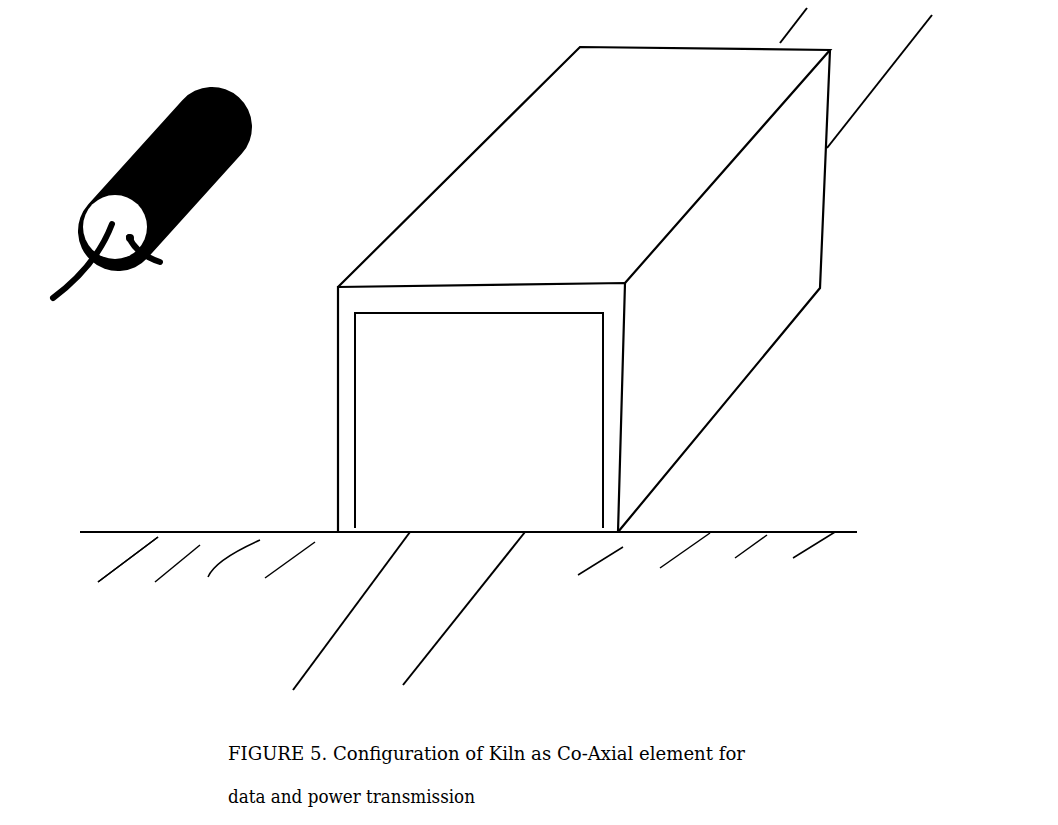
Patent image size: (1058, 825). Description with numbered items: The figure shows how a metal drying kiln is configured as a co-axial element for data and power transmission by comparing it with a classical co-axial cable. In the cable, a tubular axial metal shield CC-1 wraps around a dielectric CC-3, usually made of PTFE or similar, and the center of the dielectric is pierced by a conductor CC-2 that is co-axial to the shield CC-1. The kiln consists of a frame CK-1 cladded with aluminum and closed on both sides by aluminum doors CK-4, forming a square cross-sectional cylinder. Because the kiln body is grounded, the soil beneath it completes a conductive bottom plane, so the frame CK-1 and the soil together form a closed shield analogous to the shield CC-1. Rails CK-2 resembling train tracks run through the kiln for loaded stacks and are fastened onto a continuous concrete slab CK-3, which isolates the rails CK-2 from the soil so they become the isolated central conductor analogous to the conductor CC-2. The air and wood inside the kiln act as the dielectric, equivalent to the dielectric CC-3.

The frame CK-1 is at (398, 212).
The rails CK-2 is at (452, 663).
The concrete slab CK-3 is at (212, 600).
The doors CK-4 is at (392, 414).
The tubular axial metal shield CC-1 is at (96, 168).
The conductor CC-2 is at (130, 300).
The dielectric CC-3 is at (179, 259).